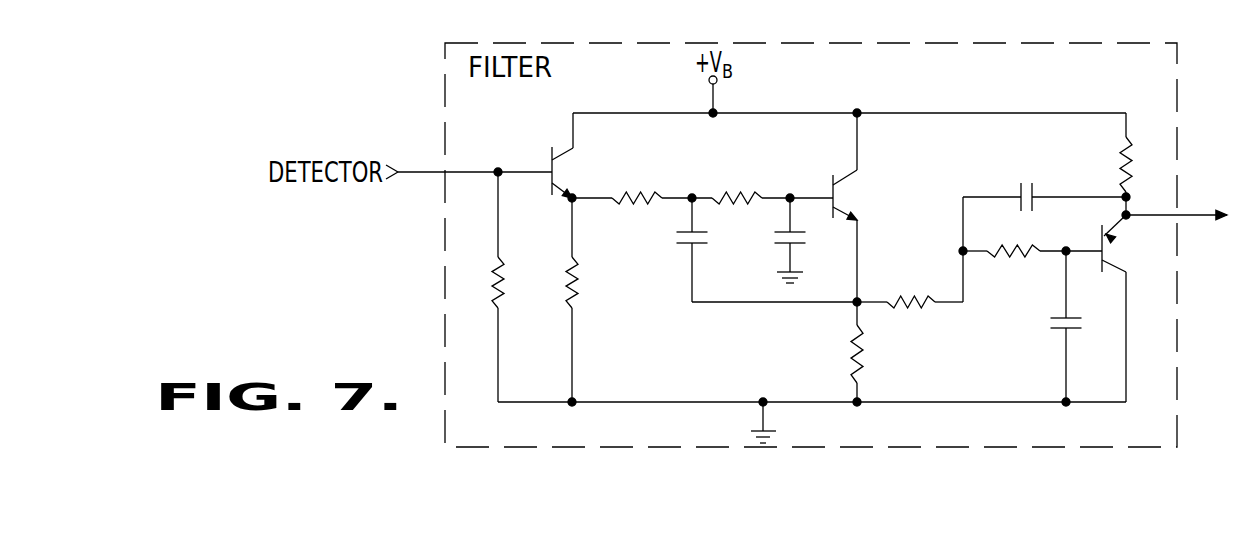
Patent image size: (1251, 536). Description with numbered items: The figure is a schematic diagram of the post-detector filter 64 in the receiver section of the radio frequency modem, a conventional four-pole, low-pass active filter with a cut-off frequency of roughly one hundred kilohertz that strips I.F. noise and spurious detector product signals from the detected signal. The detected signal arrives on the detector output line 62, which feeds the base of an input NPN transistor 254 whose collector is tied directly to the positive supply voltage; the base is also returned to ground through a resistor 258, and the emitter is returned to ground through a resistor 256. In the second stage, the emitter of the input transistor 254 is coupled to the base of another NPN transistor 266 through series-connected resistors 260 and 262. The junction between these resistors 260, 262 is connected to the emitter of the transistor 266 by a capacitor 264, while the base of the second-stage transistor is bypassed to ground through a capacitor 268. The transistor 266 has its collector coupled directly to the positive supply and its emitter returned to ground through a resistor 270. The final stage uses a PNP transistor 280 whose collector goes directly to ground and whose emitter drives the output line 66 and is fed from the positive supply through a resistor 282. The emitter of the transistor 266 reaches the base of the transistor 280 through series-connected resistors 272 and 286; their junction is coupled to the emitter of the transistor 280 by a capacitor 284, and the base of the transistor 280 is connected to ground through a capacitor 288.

The detector output line 62 is at (418, 175).
The post-detector filter 64 is at (883, 45).
The output line 66 is at (1192, 215).
The input NPN transistor 254 is at (574, 172).
The resistor 256 is at (569, 300).
The resistor 258 is at (495, 300).
The resistor 260 is at (624, 192).
The resistor 262 is at (727, 192).
The capacitor 264 is at (672, 240).
The NPN transistor 266 is at (855, 185).
The capacitor 268 is at (782, 240).
The resistor 270 is at (850, 346).
The resistor 272 is at (935, 295).
The PNP transistor 280 is at (1110, 252).
The resistor 282 is at (1120, 162).
The capacitor 284 is at (1020, 182).
The resistor 286 is at (1018, 258).
The capacitor 288 is at (1050, 325).